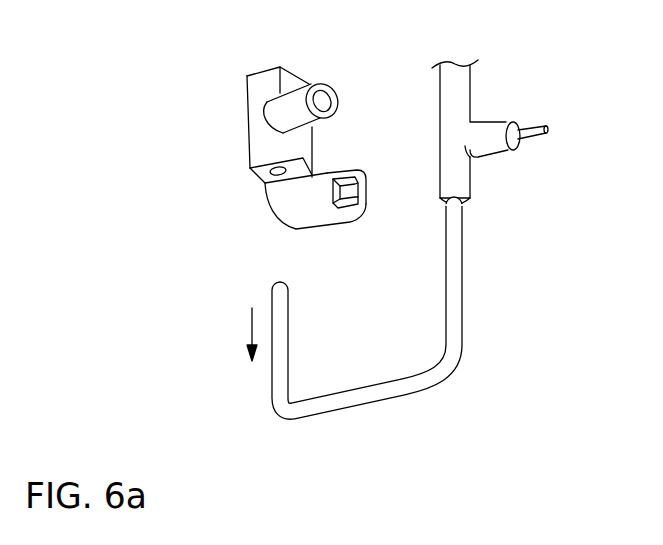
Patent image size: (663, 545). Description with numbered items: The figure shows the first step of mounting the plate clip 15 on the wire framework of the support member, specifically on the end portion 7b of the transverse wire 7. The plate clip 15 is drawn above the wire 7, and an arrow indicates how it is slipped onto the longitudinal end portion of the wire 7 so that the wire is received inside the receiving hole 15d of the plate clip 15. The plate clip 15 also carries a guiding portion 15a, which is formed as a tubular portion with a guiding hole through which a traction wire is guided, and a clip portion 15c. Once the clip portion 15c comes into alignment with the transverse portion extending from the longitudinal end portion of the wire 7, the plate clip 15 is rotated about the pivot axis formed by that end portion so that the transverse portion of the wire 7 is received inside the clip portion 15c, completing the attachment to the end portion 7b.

The transverse wire 7 is at (458, 252).
The end portion of the transverse wire 7b is at (398, 396).
The plate clip 15 is at (255, 144).
The guiding portion 15a is at (301, 95).
The clip portion 15c is at (344, 210).
The receiving hole 15d is at (276, 175).